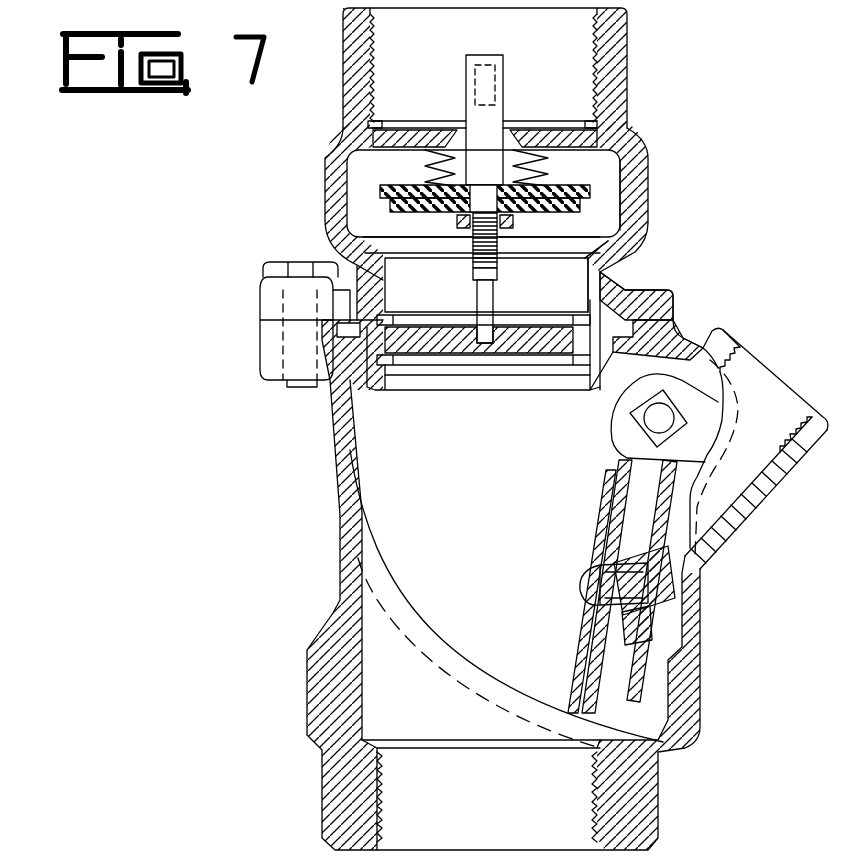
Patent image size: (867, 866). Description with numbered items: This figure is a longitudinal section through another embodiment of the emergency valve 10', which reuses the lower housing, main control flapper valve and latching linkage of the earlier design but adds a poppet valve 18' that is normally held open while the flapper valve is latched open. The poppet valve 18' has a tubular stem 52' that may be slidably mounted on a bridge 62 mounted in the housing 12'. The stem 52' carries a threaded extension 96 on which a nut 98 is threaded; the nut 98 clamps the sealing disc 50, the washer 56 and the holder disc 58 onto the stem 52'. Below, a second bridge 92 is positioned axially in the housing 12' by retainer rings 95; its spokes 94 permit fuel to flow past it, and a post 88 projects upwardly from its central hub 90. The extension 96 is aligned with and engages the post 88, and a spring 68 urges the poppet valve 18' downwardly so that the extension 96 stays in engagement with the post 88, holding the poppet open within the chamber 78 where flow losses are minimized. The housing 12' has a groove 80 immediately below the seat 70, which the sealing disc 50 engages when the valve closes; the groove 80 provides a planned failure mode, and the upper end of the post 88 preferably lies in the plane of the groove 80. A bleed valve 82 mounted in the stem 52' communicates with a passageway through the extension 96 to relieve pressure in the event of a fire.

The emergency valve 10' is at (544, 443).
The housing 12' is at (460, 222).
The poppet valve 18' is at (446, 194).
The sealing disc 50 is at (632, 198).
The tubular stem 52' is at (485, 96).
The washer 56 is at (543, 212).
The holder disc 58 is at (642, 165).
The bridge 62 is at (577, 148).
The spring 68 is at (535, 174).
The seat 70 is at (392, 240).
The chamber 78 is at (348, 174).
The groove 80 is at (606, 271).
The bleed valve 82 is at (462, 86).
The post 88 is at (494, 303).
The central hub 90 is at (520, 378).
The bridge 92 is at (547, 367).
The spokes 94 is at (450, 380).
The retainer rings 95 is at (593, 358).
The threaded extension 96 is at (476, 252).
The nut 98 is at (527, 232).